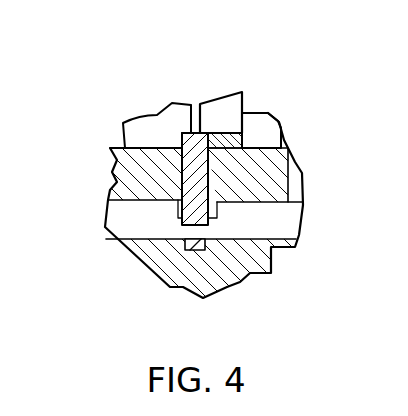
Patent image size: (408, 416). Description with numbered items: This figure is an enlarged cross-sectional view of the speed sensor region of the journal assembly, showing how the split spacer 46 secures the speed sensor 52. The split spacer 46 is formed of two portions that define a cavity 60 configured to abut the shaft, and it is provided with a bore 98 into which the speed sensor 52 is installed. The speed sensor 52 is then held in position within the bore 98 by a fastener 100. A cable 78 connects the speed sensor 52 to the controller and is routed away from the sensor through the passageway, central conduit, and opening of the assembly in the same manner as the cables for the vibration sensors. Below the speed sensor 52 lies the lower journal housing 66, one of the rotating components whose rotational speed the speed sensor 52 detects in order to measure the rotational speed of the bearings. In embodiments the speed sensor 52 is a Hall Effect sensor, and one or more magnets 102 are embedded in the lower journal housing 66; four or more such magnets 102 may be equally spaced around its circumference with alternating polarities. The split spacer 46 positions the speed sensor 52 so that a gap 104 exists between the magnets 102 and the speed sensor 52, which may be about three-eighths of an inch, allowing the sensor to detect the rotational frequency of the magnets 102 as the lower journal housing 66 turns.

The split spacer 46 is at (232, 173).
The speed sensor 52 is at (180, 188).
The cavity 60 is at (230, 123).
The lower journal housing 66 is at (170, 260).
The cable 78 is at (187, 117).
The bore 98 is at (222, 148).
The fastener 100 is at (180, 213).
The magnet 102 is at (203, 250).
The gap 104 is at (235, 229).